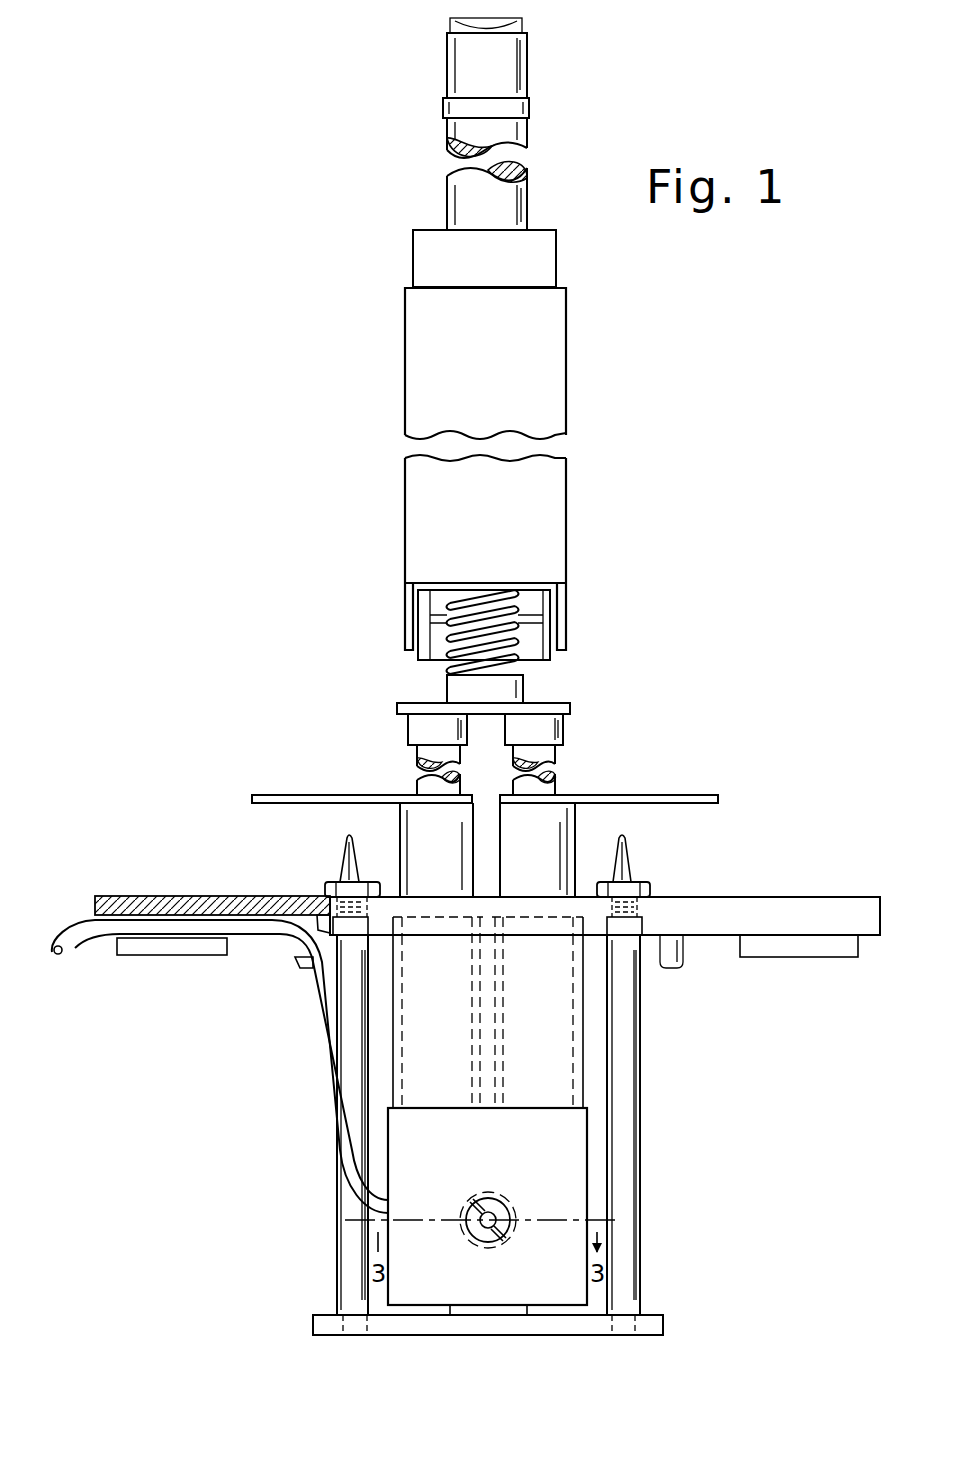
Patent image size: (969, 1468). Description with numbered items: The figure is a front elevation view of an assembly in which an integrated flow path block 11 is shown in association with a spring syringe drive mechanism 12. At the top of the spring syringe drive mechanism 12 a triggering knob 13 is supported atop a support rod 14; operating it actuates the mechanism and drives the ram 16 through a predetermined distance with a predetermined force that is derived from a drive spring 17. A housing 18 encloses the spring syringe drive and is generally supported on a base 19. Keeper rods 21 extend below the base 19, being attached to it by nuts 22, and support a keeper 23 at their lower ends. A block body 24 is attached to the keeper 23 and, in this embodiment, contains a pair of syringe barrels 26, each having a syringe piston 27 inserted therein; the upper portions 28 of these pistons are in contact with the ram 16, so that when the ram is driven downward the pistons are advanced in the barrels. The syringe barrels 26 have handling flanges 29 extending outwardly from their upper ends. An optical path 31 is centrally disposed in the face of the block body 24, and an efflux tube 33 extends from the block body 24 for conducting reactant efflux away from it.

The integrated flow path block 11 is at (590, 1108).
The spring syringe drive mechanism 12 is at (570, 386).
The triggering knob 13 is at (527, 73).
The support rod 14 is at (527, 140).
The ram 16 is at (570, 703).
The drive spring 17 is at (515, 637).
The housing 18 is at (556, 268).
The base 19 is at (770, 897).
The keeper rods 21 is at (642, 1052).
The nuts 22 is at (340, 856).
The keeper 23 is at (645, 1336).
The block body 24 is at (587, 1175).
The syringe barrels 26 is at (393, 1050).
The syringe piston 27 is at (417, 784).
The upper portions 28 is at (408, 730).
The handling flanges 29 is at (252, 795).
The optical path 31 is at (466, 1244).
The efflux tube 33 is at (320, 1005).